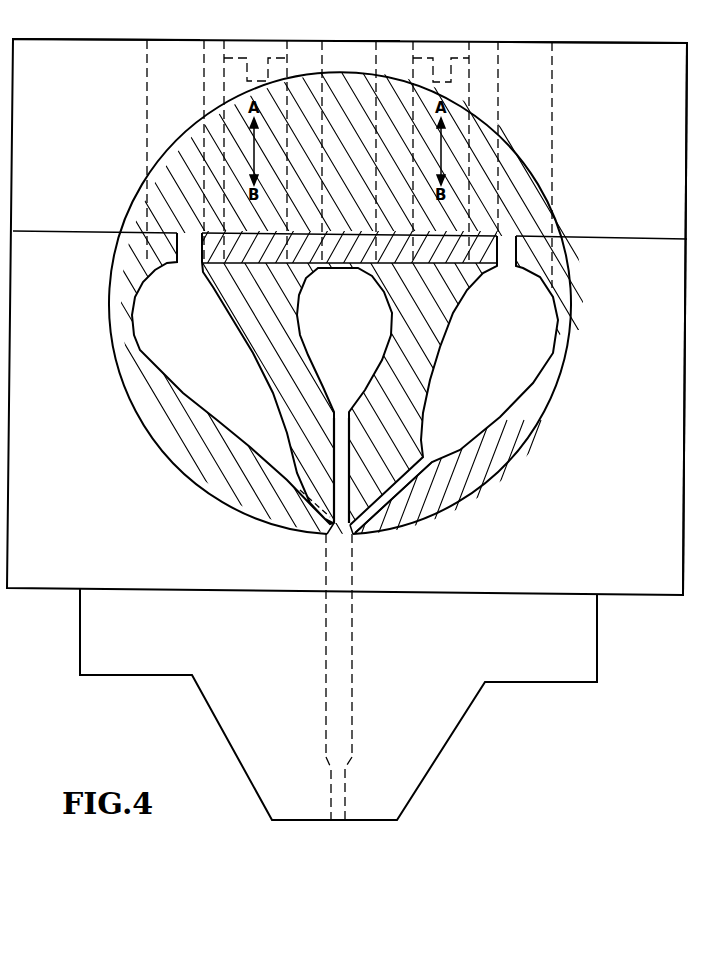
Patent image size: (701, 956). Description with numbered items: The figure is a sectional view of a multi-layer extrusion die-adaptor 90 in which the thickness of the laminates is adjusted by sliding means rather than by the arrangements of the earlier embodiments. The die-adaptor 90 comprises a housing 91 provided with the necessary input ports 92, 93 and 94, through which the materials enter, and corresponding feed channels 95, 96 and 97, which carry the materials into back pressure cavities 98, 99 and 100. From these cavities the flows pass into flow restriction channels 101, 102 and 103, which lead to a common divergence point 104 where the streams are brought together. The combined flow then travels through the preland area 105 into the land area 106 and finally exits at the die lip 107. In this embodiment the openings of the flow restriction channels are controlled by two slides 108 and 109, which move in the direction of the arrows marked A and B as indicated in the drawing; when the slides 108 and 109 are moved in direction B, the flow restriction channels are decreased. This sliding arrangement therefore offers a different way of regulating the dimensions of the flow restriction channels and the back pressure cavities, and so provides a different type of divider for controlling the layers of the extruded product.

The die-adaptor 90 is at (683, 574).
The housing 91 is at (683, 418).
The input port 92 is at (172, 40).
The input port 93 is at (358, 42).
The input port 94 is at (522, 43).
The feed channel 95 is at (150, 135).
The feed channel 96 is at (348, 72).
The feed channel 97 is at (535, 138).
The back pressure cavity 98 is at (189, 334).
The back pressure cavity 99 is at (355, 334).
The back pressure cavity 100 is at (519, 336).
The flow restriction channel 101 is at (322, 518).
The flow restriction channel 102 is at (353, 478).
The flow restriction channel 103 is at (405, 522).
The divergence point 104 is at (342, 538).
The preland area 105 is at (346, 665).
The land area 106 is at (329, 790).
The die lip 107 is at (337, 821).
The slide 108 is at (240, 58).
The slide 109 is at (433, 60).